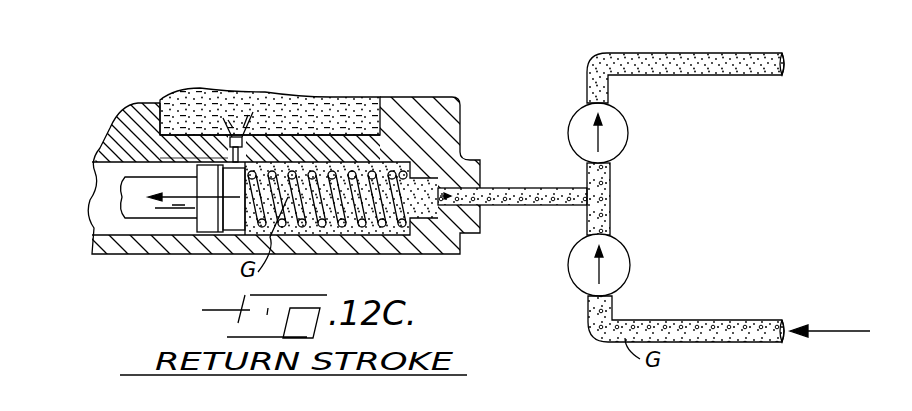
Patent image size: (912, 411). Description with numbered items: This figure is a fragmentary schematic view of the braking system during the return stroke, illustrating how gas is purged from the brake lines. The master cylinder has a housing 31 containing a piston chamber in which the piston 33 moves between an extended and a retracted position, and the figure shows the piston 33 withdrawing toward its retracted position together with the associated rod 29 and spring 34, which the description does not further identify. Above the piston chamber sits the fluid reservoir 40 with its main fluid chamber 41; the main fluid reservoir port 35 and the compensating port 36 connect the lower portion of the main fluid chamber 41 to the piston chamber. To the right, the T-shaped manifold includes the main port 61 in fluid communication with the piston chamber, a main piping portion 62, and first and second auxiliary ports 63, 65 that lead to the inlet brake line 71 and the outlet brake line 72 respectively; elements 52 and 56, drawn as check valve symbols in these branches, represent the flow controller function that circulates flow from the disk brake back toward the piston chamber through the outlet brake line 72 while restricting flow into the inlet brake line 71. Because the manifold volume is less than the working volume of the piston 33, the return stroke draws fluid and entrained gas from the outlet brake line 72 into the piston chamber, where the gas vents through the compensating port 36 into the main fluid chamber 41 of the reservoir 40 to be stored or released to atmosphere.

The fluid reservoir 40 is at (118, 95).
The main fluid reservoir port 35 is at (165, 158).
The compensating port 36 is at (258, 147).
The main fluid chamber 41 is at (333, 98).
The housing 31 is at (430, 100).
The first auxiliary port 63 is at (587, 100).
The inlet brake line 71 is at (756, 53).
The main port 61 is at (483, 188).
The check valve 52 is at (628, 133).
The main piping portion 62 is at (517, 206).
The check valve 56 is at (622, 250).
The piston rod 29 is at (140, 225).
The piston 33 is at (222, 232).
The spring 34 is at (343, 230).
The second auxiliary port 65 is at (588, 300).
The outlet brake line 72 is at (745, 320).